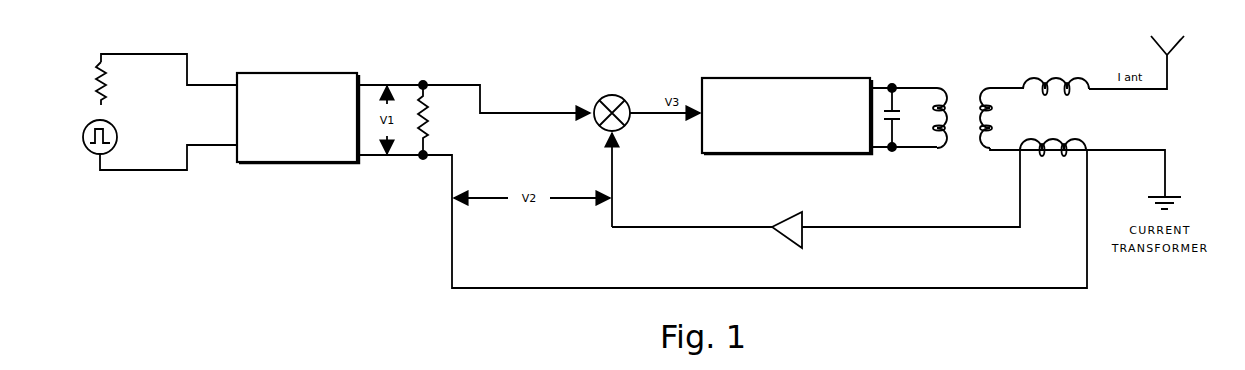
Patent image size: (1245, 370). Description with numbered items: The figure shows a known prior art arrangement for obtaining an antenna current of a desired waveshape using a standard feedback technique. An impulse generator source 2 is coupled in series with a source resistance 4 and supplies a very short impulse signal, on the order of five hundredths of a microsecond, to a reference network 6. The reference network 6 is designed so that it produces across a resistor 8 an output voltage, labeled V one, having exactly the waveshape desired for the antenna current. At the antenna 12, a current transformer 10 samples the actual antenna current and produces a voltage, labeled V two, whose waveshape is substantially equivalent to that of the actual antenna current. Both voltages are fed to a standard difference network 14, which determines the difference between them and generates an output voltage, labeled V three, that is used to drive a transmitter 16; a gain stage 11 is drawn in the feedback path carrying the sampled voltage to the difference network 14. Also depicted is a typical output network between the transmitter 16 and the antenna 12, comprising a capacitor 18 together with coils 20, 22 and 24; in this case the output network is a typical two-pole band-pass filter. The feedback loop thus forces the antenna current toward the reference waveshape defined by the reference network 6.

The impulse generator source 2 is at (116, 128).
The source resistance 4 is at (104, 92).
The reference network 6 is at (268, 72).
The resistor 8 is at (430, 128).
The current transformer 10 is at (1044, 138).
The gain amplifier 11 is at (806, 218).
The antenna 12 is at (1178, 51).
The difference network 14 is at (628, 125).
The transmitter 16 is at (767, 77).
The capacitor 18 is at (900, 113).
The coil 20 is at (948, 90).
The coil 22 is at (989, 126).
The coil 24 is at (1042, 80).